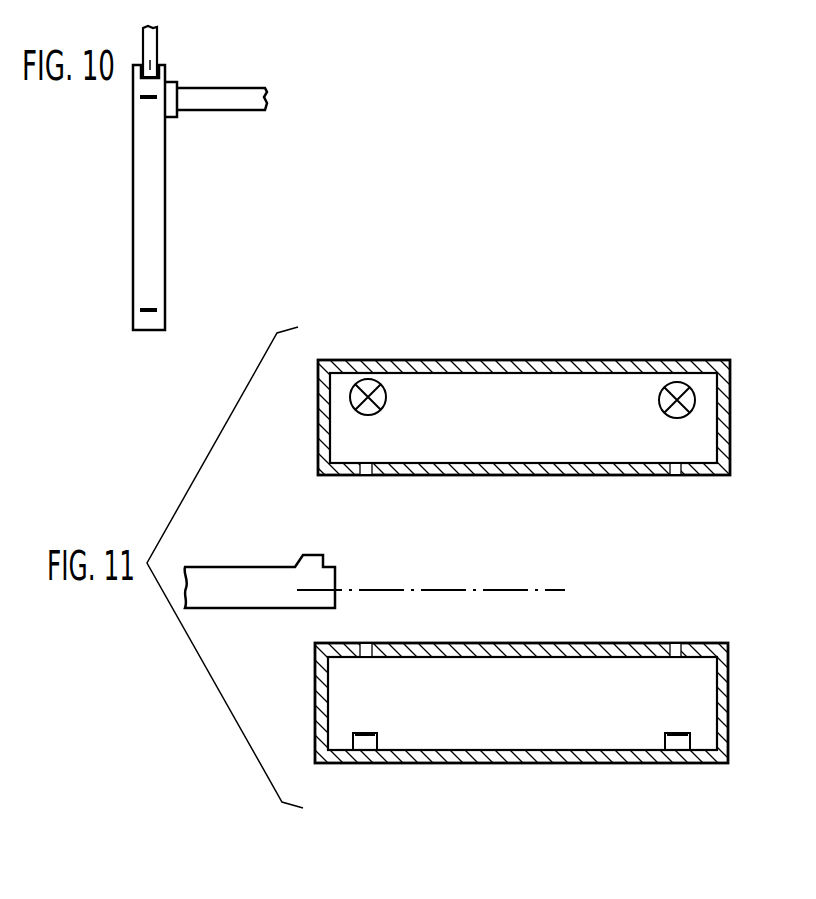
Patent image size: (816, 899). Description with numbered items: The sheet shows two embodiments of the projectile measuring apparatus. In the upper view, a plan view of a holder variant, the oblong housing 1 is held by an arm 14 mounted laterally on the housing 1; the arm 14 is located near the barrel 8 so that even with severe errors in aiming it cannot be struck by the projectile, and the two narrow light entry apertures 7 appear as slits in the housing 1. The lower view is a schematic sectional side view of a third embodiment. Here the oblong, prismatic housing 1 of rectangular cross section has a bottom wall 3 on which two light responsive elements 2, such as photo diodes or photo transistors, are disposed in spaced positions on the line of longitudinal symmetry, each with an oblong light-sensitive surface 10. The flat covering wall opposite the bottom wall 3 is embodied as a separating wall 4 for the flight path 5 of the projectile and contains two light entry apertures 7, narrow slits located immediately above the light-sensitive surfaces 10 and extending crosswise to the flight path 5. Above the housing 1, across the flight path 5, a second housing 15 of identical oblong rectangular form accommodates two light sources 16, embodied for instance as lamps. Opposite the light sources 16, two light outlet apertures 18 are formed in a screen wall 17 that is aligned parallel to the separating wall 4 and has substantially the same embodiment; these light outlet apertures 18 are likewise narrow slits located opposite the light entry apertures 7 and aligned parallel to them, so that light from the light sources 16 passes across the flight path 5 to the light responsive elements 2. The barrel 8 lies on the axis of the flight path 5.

In FIG. 10, the housing 1 is at (157, 210).
In FIG. 11, the housing 1 is at (730, 708).
In FIG. 11, the light responsive element 2 is at (378, 740).
In FIG. 11, the bottom wall 3 is at (442, 753).
In FIG. 11, the separating wall 4 is at (527, 652).
In FIG. 11, the flight path 5 is at (528, 590).
In FIG. 10, the light entry aperture 7 is at (148, 100).
In FIG. 11, the light entry aperture 7 is at (367, 648).
In FIG. 10, the barrel 8 is at (152, 38).
In FIG. 11, the barrel 8 is at (252, 582).
In FIG. 11, the light-sensitive surface 10 is at (362, 733).
In FIG. 10, the arm 14 is at (237, 95).
In FIG. 11, the second housing 15 is at (563, 368).
In FIG. 11, the light source 16 is at (371, 381).
In FIG. 11, the screen wall 17 is at (522, 470).
In FIG. 11, the light outlet aperture 18 is at (366, 476).